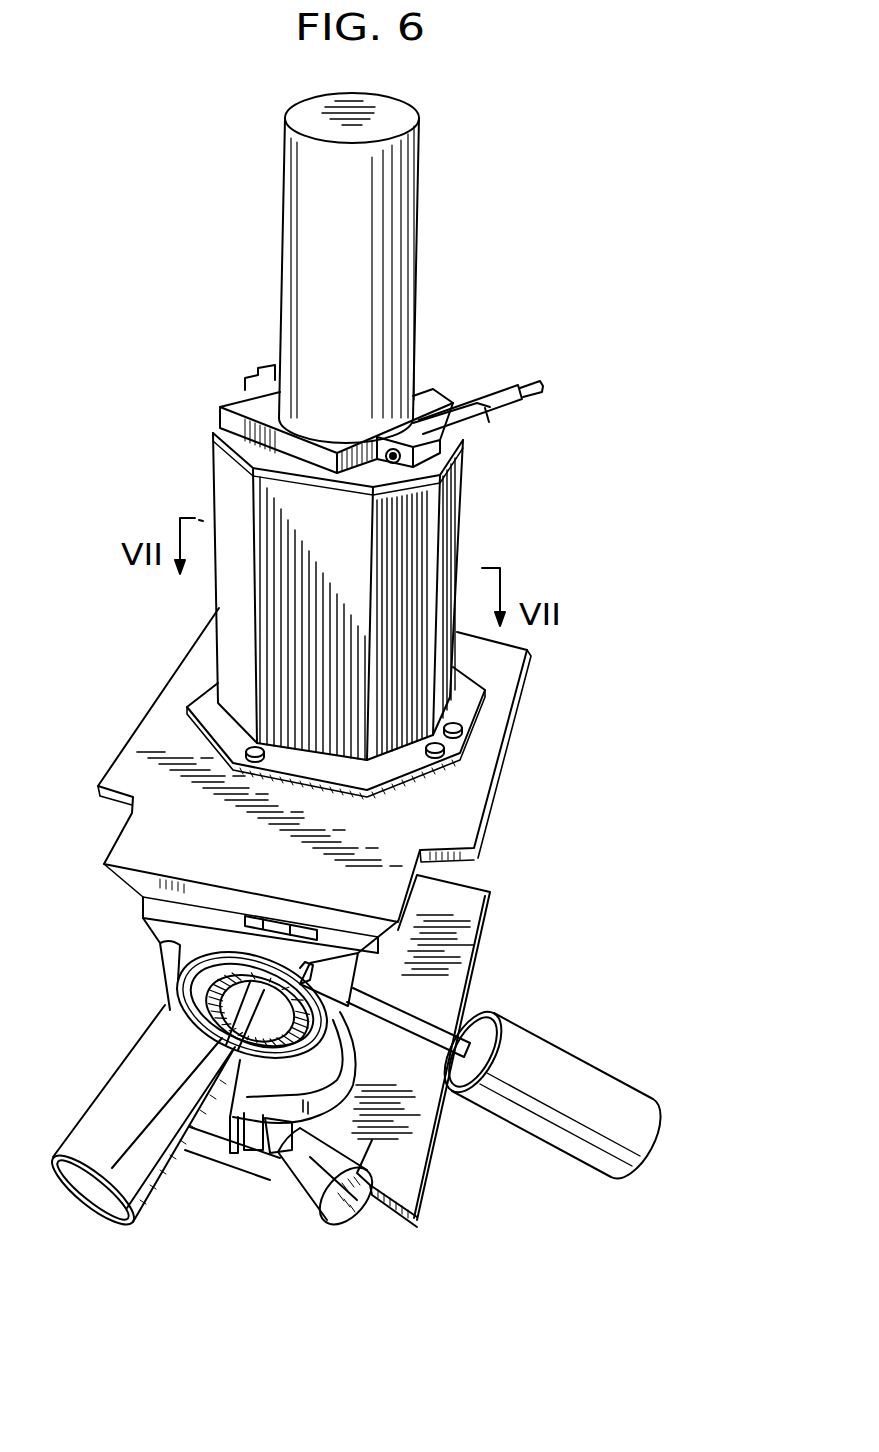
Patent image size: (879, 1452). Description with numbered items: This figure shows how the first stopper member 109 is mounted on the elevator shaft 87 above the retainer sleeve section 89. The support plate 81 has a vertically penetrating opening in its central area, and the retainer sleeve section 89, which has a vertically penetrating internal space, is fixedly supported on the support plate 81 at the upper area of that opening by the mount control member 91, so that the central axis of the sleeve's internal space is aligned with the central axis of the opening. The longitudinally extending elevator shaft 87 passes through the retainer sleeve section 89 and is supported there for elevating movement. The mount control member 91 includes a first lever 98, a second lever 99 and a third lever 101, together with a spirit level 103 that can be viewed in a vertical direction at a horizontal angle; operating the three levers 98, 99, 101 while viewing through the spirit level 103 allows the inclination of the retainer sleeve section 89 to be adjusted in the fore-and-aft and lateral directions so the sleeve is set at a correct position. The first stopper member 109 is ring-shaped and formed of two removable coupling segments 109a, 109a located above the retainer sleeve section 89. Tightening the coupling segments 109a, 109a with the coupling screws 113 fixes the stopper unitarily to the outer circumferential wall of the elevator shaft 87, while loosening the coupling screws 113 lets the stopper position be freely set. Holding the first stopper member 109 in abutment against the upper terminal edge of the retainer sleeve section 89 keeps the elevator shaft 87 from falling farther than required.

The support plate 81 is at (465, 928).
The elevator shaft 87 is at (412, 258).
The retainer sleeve section 89 is at (230, 470).
The mount control member 91 is at (176, 963).
The first lever 98 is at (337, 1215).
The second lever 99 is at (148, 1195).
The third lever 101 is at (590, 1072).
The spirit level 103 is at (280, 923).
The first stopper member 109 is at (437, 386).
The coupling segments 109a is at (270, 370).
The coupling screws 113 is at (480, 424).